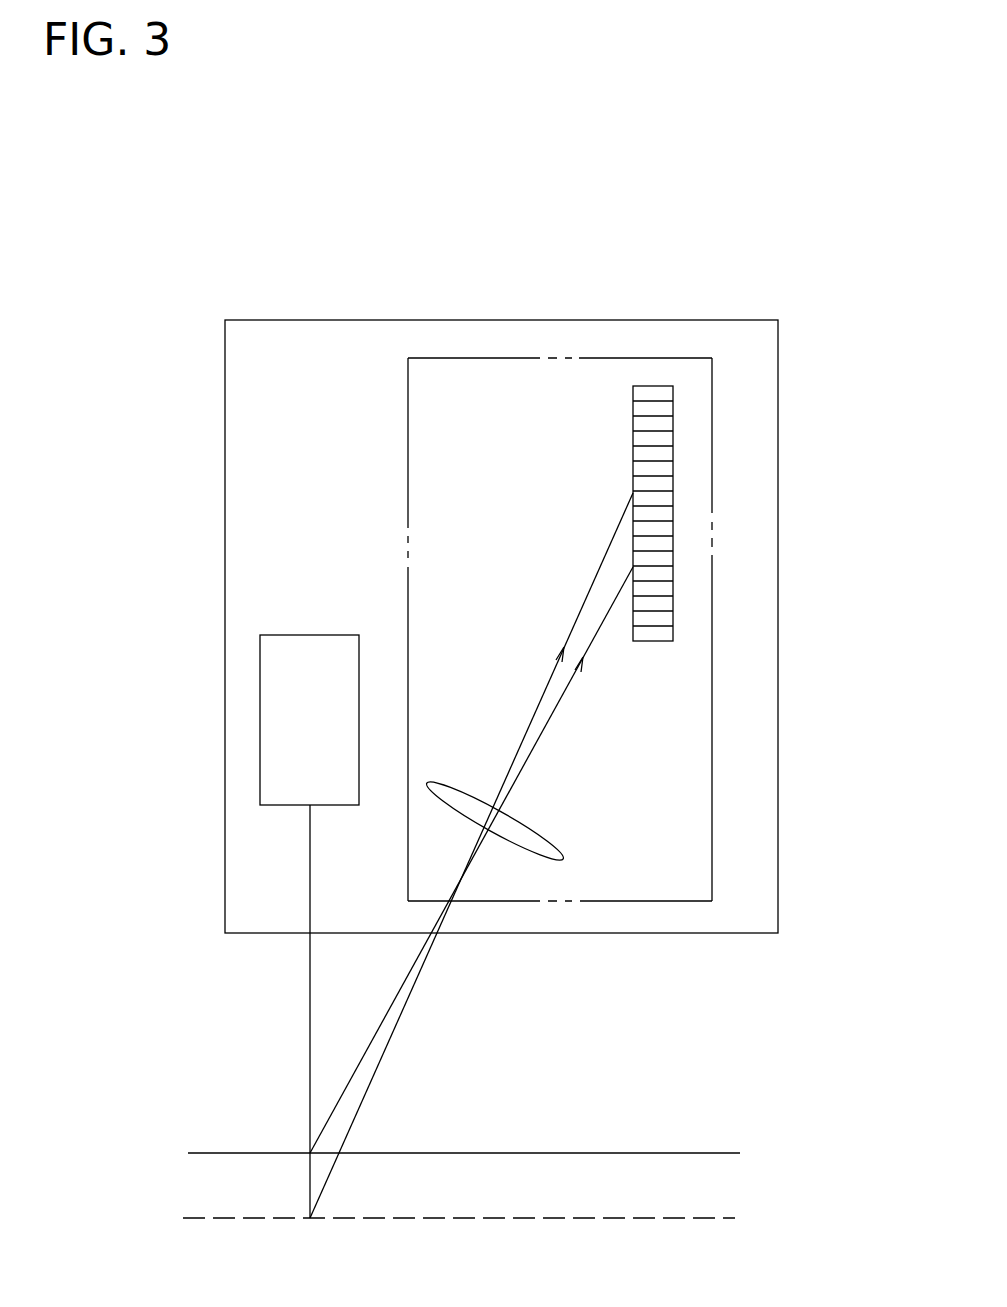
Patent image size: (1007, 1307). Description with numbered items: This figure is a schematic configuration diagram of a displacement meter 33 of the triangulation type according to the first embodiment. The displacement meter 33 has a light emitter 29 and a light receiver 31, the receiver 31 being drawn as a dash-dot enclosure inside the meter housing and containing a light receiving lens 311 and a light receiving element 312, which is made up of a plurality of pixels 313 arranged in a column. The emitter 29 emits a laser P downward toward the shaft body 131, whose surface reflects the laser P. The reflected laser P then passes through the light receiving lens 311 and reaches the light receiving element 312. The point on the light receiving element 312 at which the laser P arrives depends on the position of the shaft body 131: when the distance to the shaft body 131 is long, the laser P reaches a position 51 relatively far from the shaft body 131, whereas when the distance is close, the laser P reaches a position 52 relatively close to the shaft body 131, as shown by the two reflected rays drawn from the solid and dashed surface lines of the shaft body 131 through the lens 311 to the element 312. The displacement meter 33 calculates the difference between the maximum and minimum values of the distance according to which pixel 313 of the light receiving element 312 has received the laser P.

The displacement meter 33 is at (762, 320).
The light receiver 31 is at (712, 493).
The light receiving lens 311 is at (462, 785).
The light receiving element 312 is at (675, 405).
The pixel 313 is at (674, 588).
The light emitter 29 is at (313, 633).
The laser P is at (310, 998).
The position 51 is at (633, 493).
The position 52 is at (633, 567).
The shaft body 131 is at (485, 1218).